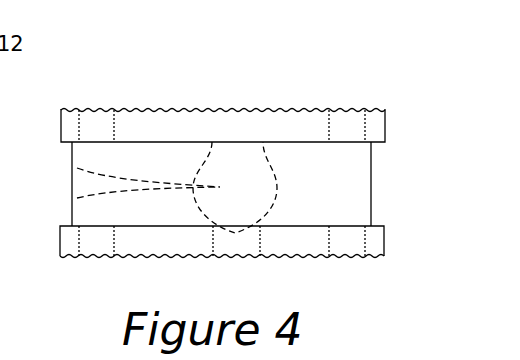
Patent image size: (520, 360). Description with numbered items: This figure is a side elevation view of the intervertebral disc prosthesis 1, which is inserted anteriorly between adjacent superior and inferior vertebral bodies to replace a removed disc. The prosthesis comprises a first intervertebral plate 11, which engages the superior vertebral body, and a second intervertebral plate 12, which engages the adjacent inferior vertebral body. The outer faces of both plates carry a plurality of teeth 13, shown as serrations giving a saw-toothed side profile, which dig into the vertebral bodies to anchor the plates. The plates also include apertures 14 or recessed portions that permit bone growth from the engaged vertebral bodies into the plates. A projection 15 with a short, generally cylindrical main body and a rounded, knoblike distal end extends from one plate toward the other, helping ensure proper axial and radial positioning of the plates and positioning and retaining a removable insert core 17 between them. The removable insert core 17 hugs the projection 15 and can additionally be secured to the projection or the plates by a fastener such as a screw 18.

The intervertebral disc prosthesis 1 is at (150, 77).
The first intervertebral plate 11 is at (385, 125).
The second intervertebral plate 12 is at (384, 246).
The teeth 13 is at (226, 110).
The apertures 14 is at (78, 129).
The projection 15 is at (255, 183).
The removable insert core 17 is at (72, 154).
The screw 18 is at (72, 185).